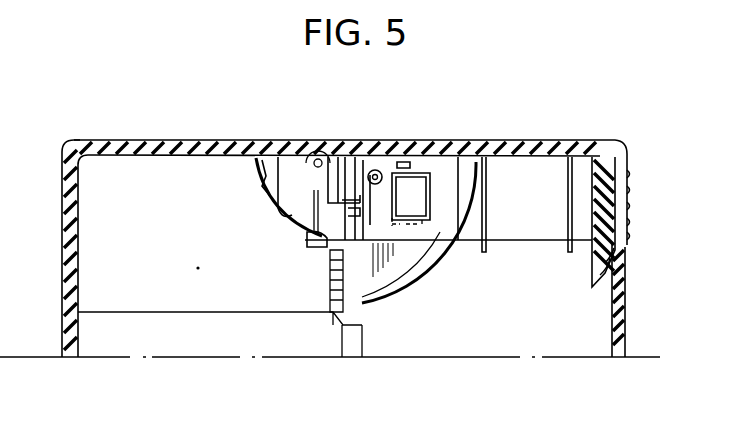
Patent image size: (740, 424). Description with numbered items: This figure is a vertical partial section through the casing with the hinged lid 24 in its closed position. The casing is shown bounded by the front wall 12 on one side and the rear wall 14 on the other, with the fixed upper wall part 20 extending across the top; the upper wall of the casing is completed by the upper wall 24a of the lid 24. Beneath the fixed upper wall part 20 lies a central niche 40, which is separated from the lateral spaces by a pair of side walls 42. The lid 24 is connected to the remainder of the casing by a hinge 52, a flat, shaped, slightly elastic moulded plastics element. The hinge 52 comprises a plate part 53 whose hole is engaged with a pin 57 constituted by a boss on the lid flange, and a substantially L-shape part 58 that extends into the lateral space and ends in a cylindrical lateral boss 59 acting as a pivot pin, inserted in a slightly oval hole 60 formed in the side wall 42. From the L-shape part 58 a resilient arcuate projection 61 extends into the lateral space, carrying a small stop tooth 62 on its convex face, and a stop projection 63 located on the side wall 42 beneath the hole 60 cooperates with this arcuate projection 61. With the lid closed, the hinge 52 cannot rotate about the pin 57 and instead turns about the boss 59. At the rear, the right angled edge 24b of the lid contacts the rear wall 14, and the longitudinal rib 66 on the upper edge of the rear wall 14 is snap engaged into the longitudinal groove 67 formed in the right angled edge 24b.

The front side wall 12 is at (73, 234).
The rear side wall 14 is at (616, 333).
The fixed upper wall part 20 is at (210, 146).
The hinged lid 24 is at (586, 141).
The upper wall of the lid 24a is at (505, 146).
The right angled edge 24b is at (608, 186).
The central niche 40 is at (193, 254).
The side wall 42 is at (233, 300).
The hinge 52 is at (397, 245).
The plate part 53 is at (418, 222).
The pin 57 is at (381, 170).
The L-shape part 58 is at (331, 150).
The cylindrical lateral boss 59 is at (317, 158).
The oval hole 60 is at (284, 206).
The resilient arcuate projection 61 is at (266, 196).
The stop tooth 62 is at (262, 178).
The stop projection 63 is at (313, 249).
The longitudinal rib 66 is at (622, 254).
The longitudinal groove 67 is at (618, 250).